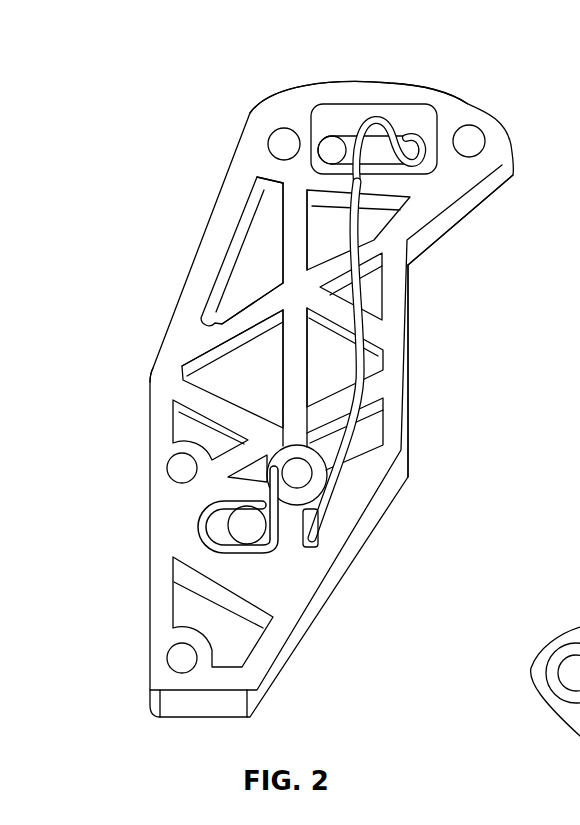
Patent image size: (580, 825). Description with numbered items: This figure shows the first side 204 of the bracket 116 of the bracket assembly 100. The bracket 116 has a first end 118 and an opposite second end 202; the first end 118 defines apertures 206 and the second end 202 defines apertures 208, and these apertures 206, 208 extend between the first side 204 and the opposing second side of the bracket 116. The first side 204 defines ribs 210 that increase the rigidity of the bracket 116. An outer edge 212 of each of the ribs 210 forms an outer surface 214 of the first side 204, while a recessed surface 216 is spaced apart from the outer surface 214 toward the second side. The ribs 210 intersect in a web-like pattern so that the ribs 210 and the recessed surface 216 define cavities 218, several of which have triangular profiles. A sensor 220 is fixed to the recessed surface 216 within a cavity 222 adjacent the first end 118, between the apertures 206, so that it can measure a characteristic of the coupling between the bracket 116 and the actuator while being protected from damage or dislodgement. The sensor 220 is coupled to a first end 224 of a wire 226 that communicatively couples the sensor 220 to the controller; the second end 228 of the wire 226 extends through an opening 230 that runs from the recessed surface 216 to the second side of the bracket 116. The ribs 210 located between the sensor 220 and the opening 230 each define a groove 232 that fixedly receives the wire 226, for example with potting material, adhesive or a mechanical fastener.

The bracket assembly 100 is at (140, 65).
The bracket 116 is at (170, 330).
The first end 118 is at (385, 82).
The second end 202 is at (223, 690).
The first side 204 is at (268, 168).
The apertures 206 is at (284, 144).
The apertures 208 is at (182, 468).
The ribs 210 is at (178, 377).
The outer edge 212 is at (235, 305).
The outer surface 214 is at (297, 228).
The recessed surface 216 is at (248, 262).
The cavities 218 is at (385, 300).
The sensor 220 is at (334, 136).
The cavity 222 is at (415, 128).
The first end of wire 224 is at (414, 141).
The wire 226 is at (378, 360).
The second end of wire 228 is at (200, 525).
The opening 230 is at (262, 540).
The groove 232 is at (360, 242).